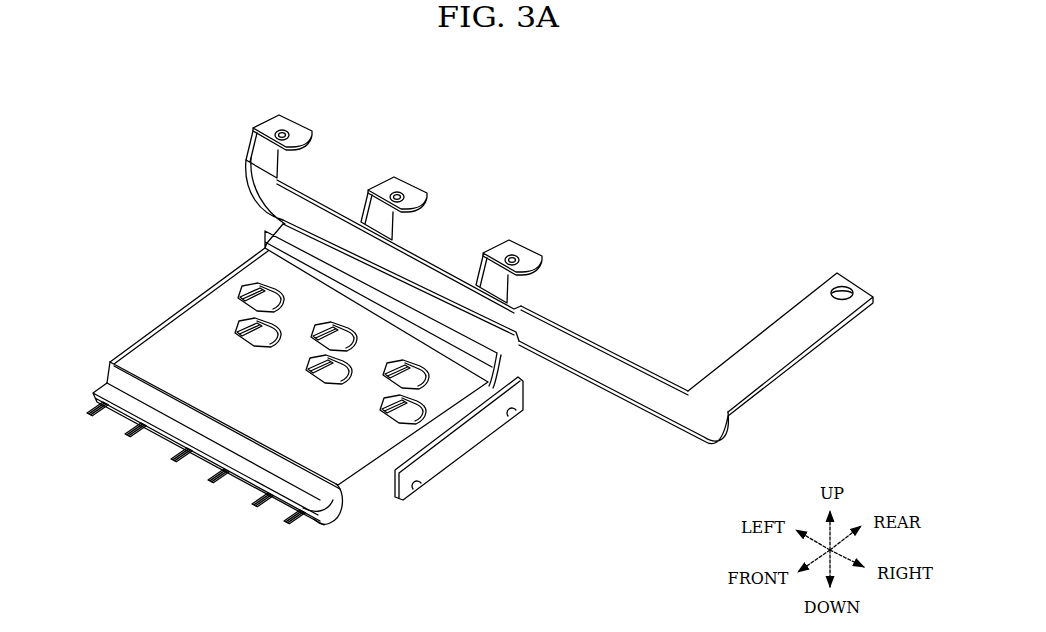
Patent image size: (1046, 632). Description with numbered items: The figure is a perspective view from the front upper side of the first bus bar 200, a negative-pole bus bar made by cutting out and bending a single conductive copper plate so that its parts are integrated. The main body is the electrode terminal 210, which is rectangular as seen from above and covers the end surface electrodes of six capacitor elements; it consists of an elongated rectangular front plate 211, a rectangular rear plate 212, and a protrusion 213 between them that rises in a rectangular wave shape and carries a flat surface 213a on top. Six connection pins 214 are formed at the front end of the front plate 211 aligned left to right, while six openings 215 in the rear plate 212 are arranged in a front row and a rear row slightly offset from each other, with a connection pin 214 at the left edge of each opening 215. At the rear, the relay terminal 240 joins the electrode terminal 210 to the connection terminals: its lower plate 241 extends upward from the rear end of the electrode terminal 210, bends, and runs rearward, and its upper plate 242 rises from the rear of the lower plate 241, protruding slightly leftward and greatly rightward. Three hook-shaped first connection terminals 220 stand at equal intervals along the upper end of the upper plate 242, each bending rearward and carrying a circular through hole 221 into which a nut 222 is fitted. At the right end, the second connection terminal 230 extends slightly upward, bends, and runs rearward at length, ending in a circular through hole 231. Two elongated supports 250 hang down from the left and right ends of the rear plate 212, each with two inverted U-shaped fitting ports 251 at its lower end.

The first bus bar 200 is at (668, 213).
The electrode terminal 210 is at (187, 300).
The front plate 211 is at (100, 387).
The rear plate 212 is at (232, 272).
The protrusion 213 is at (148, 338).
The flat surface 213a is at (337, 470).
The connection pin 214 is at (242, 330).
The opening 215 is at (280, 337).
The first connection terminal 220 is at (306, 125).
The through hole 221 is at (278, 129).
The nut 222 is at (256, 124).
The second connection terminal 230 is at (787, 328).
The through hole 231 is at (838, 287).
The relay terminal 240 is at (517, 350).
The lower plate 241 is at (252, 210).
The upper plate 242 is at (647, 399).
The support 250 is at (467, 452).
The fitting port 251 is at (513, 418).